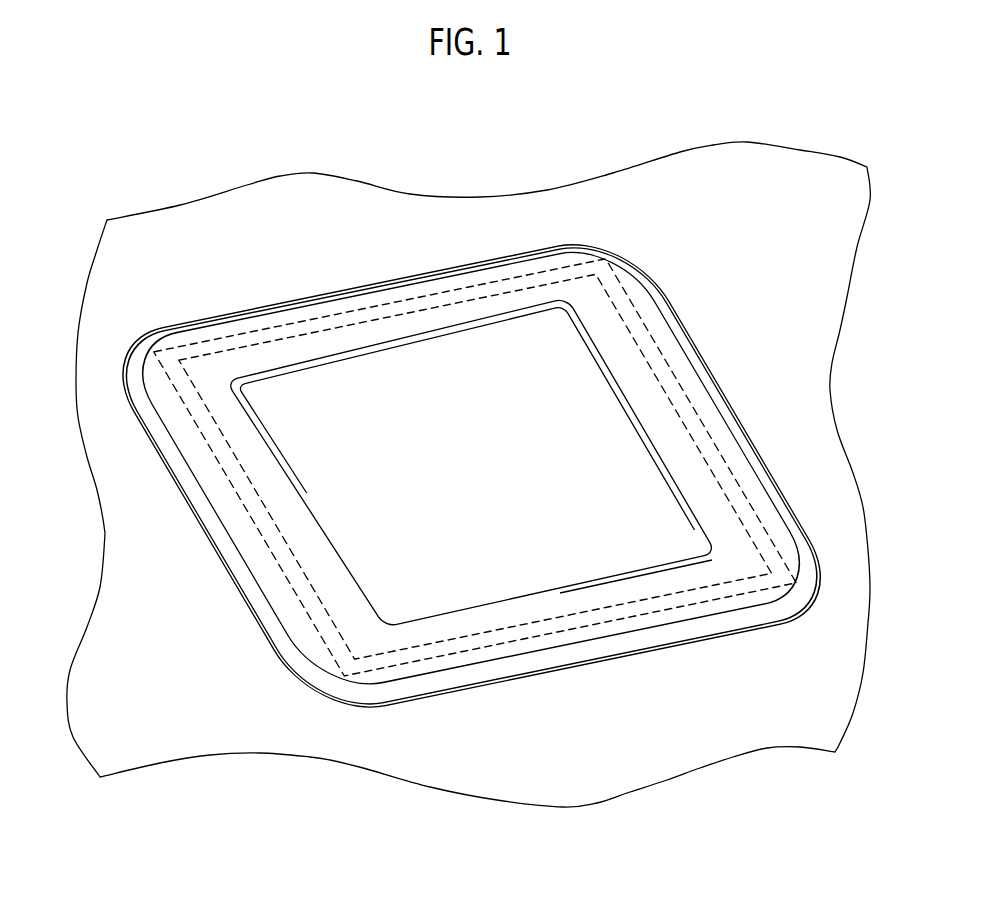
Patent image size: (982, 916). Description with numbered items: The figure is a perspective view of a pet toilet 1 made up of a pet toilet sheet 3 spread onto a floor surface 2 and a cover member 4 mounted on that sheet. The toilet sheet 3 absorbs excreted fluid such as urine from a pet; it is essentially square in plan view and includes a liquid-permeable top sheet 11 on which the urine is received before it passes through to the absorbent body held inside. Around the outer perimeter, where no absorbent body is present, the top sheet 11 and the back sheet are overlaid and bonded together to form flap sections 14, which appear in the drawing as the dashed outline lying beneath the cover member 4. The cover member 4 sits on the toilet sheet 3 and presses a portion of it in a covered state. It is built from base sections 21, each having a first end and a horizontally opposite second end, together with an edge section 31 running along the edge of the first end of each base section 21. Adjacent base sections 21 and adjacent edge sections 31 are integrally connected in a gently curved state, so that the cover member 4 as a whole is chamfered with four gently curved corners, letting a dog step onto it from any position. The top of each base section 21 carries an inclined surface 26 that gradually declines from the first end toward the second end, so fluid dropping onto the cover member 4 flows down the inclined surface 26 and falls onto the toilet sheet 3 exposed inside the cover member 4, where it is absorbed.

The pet toilet 1 is at (469, 506).
The floor surface 2 is at (469, 506).
The pet toilet sheet 3 is at (471, 487).
The cover member 4 is at (471, 487).
The top sheet 11 is at (471, 529).
The flap sections 14 is at (475, 508).
The base section 21 is at (471, 482).
The inclined surface 26 is at (467, 464).
The edge section 31 is at (471, 507).